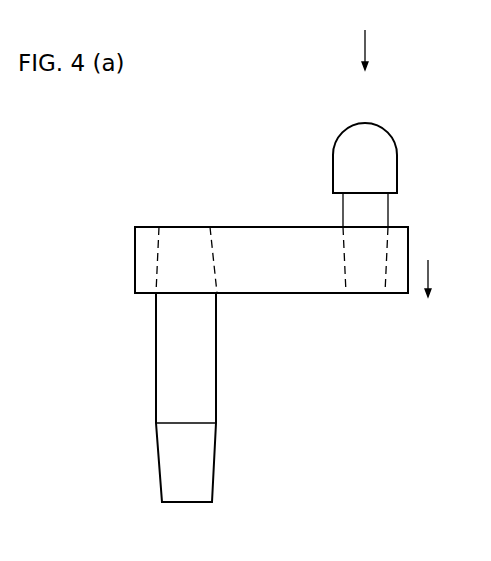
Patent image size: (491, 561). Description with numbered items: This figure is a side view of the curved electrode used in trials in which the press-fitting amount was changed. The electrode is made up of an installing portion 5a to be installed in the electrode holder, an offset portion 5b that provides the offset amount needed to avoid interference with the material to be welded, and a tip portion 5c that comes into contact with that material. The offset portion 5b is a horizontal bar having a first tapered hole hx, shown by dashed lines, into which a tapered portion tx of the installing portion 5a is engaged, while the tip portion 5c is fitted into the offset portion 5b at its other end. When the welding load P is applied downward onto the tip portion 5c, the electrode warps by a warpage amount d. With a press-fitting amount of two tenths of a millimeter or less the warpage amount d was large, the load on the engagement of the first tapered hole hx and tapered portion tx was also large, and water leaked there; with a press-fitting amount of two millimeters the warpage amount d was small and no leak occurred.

The installing portion 5a is at (202, 350).
The offset portion 5b is at (272, 243).
The tip portion 5c is at (387, 169).
The tapered portion tx is at (172, 243).
The first tapered hole hx is at (212, 246).
The welding load P is at (367, 39).
The warpage amount d is at (436, 278).